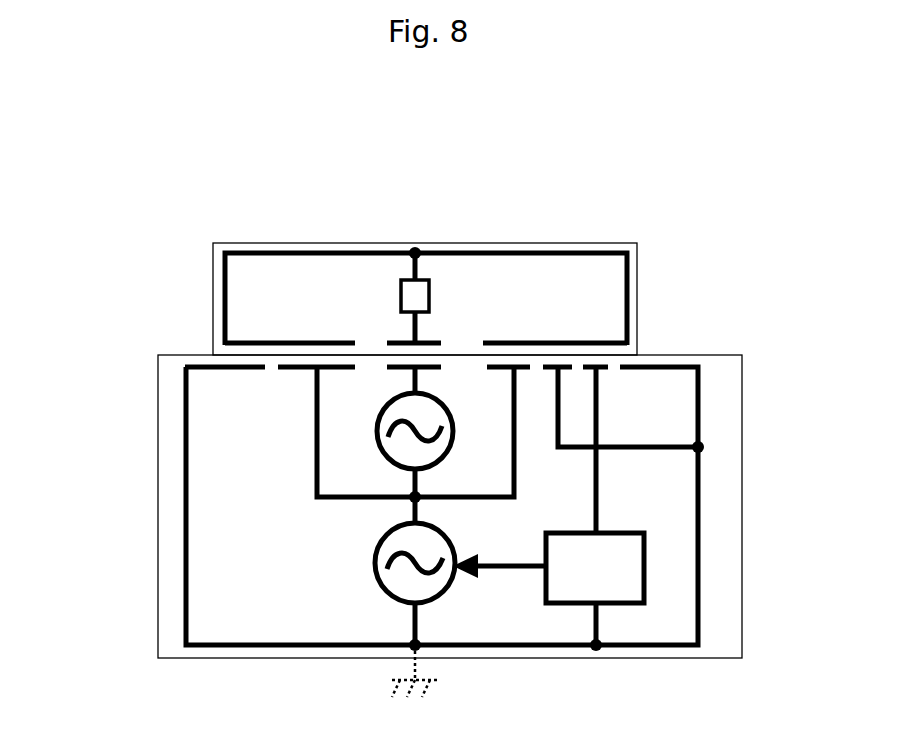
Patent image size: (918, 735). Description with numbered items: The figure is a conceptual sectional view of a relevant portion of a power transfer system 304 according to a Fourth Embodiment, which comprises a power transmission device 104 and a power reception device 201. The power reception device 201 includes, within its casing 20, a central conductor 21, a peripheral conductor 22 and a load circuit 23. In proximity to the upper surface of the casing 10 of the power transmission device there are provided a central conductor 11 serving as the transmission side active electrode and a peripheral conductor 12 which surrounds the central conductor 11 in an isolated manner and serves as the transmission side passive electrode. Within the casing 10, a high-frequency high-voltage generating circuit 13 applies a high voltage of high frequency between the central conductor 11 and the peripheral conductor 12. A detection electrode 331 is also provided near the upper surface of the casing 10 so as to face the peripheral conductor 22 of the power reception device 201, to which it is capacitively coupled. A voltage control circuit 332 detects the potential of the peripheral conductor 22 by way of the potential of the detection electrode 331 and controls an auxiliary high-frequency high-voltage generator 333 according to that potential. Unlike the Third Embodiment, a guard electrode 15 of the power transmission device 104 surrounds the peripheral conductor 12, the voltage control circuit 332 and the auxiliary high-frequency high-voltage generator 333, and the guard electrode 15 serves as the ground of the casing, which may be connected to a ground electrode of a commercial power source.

The power transfer system 304 is at (698, 155).
The casing 20 is at (637, 243).
The peripheral conductor 22 is at (628, 295).
The central conductor 21 is at (435, 332).
The load circuit 23 is at (401, 297).
The power reception device 201 is at (188, 300).
The casing 10 is at (742, 355).
The power transmission device 104 is at (128, 489).
The guard electrode 15 is at (236, 372).
The peripheral conductor 12 is at (297, 372).
The central conductor 11 is at (398, 373).
The high-frequency high-voltage generating circuit 13 is at (452, 418).
The detection electrode 331 is at (602, 372).
The voltage control circuit 332 is at (618, 533).
The auxiliary high-frequency high-voltage generator 333 is at (446, 536).